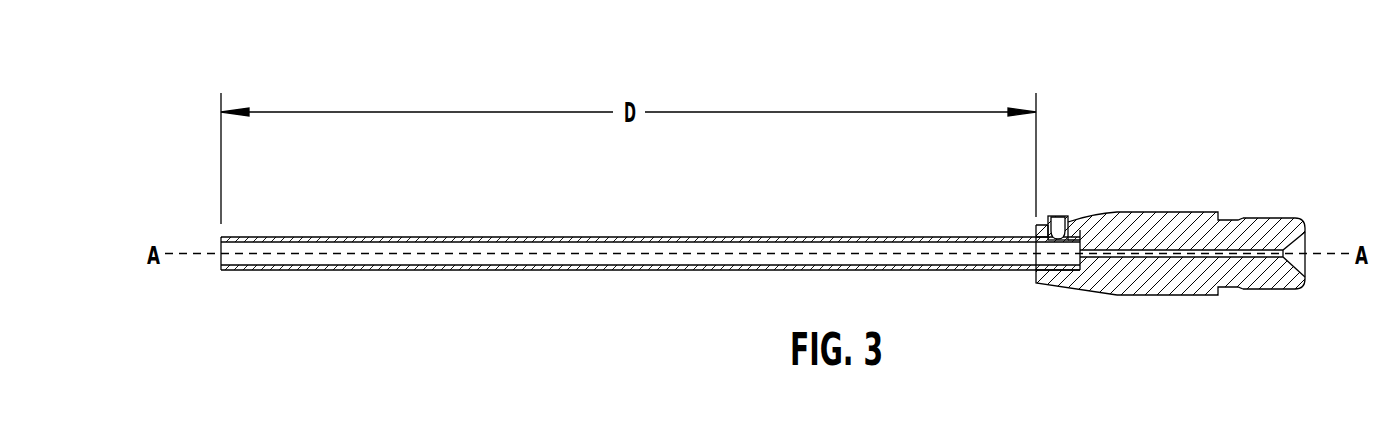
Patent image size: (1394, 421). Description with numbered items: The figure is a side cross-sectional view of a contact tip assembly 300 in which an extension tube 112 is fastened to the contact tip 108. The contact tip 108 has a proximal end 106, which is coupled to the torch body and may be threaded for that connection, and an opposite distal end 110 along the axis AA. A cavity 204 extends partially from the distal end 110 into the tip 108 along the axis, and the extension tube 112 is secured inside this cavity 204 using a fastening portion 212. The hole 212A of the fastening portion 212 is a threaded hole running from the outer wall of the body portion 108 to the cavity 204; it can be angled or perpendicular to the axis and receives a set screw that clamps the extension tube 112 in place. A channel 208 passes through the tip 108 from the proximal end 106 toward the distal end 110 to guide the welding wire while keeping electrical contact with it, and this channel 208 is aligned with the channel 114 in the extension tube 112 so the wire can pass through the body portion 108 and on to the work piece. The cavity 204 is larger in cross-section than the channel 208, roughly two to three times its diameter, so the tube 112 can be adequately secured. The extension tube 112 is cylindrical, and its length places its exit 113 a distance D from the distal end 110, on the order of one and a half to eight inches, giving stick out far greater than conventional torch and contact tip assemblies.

The contact tip assembly 300 is at (1184, 75).
The exit 113 is at (220, 248).
The extension tube 112 is at (623, 272).
The channel 114 is at (767, 257).
The distal end 110 is at (1035, 230).
The cavity 204 is at (1062, 271).
The fastening portion 212 is at (1057, 216).
The hole 212A is at (1070, 228).
The contact tip 108 is at (1182, 223).
The proximal end 106 is at (1306, 225).
The channel 208 is at (1147, 257).